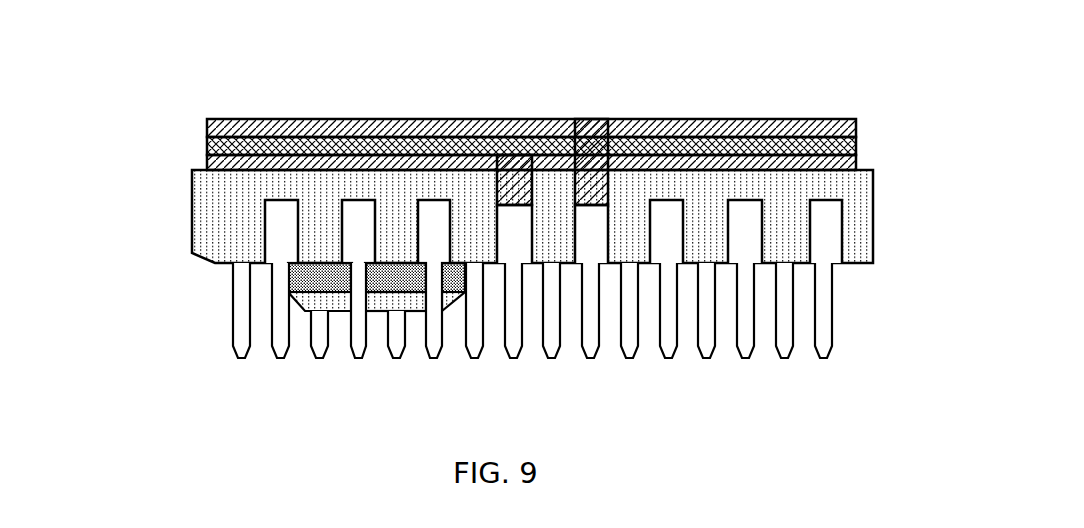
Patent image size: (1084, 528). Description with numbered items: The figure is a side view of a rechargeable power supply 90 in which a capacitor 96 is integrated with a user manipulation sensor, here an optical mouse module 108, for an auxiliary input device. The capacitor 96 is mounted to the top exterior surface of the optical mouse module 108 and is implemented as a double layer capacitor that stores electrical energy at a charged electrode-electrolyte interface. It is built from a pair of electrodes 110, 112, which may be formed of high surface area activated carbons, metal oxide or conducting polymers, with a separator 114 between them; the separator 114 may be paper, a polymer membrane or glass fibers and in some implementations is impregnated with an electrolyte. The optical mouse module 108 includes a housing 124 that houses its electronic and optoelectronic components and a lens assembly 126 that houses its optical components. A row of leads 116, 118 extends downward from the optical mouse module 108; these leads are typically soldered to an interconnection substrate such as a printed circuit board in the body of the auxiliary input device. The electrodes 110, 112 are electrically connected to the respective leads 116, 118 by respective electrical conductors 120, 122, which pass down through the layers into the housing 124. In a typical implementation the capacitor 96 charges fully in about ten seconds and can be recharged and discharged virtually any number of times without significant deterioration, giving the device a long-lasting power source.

The sensor assembly 90 is at (883, 77).
The capacitor 96 is at (195, 168).
The optical mouse module 108 is at (132, 213).
The electrode 110 is at (842, 118).
The electrode 112 is at (855, 166).
The separator 114 is at (858, 142).
The lead 116 is at (553, 360).
The lead 118 is at (515, 360).
The electrical conductor 120 is at (593, 135).
The electrical conductor 122 is at (515, 167).
The housing 124 is at (875, 238).
The lens assembly 126 is at (337, 312).